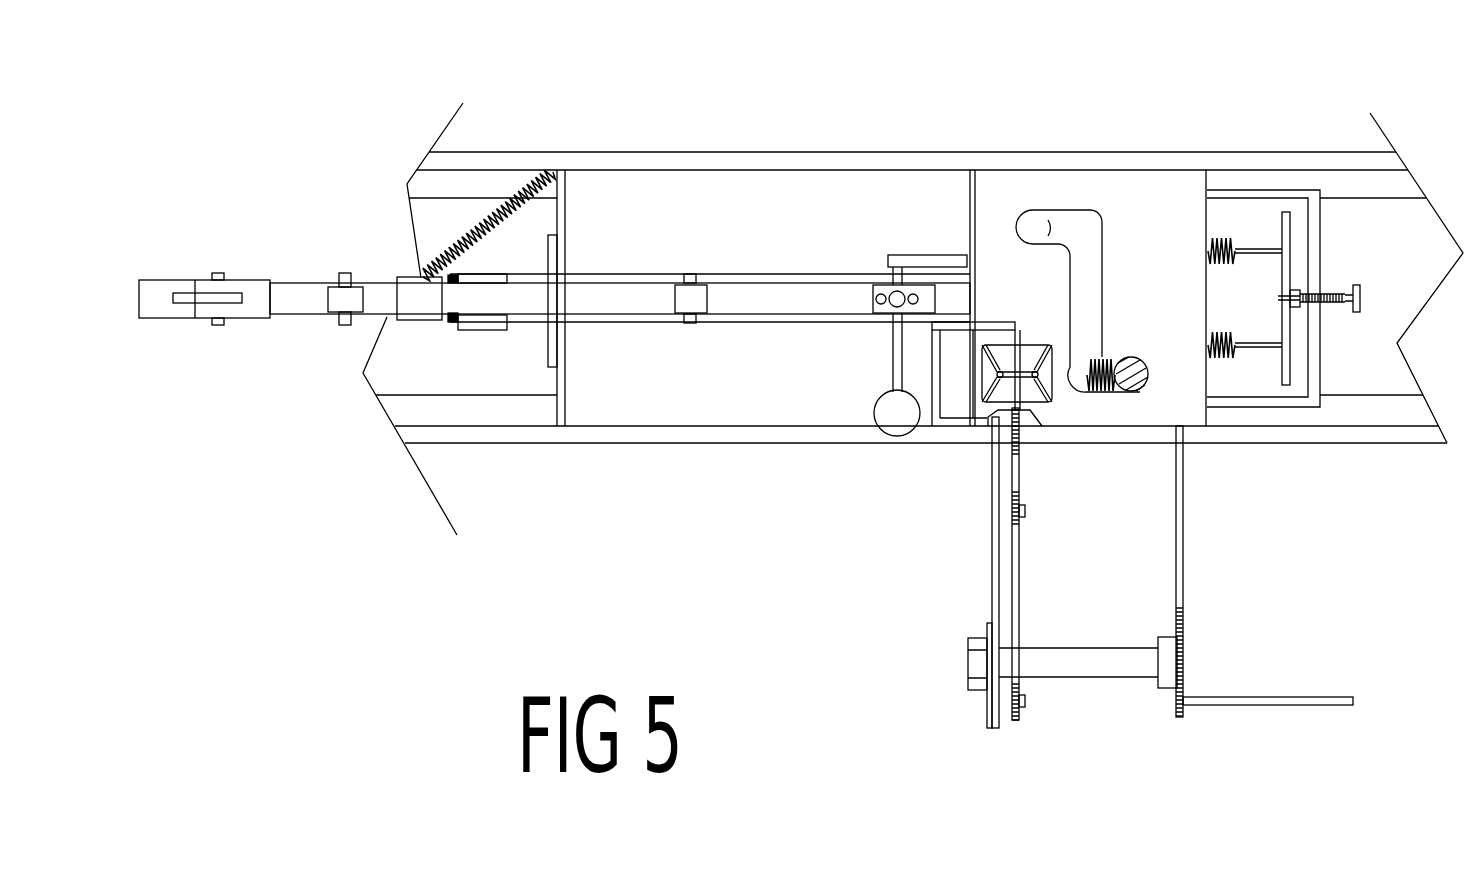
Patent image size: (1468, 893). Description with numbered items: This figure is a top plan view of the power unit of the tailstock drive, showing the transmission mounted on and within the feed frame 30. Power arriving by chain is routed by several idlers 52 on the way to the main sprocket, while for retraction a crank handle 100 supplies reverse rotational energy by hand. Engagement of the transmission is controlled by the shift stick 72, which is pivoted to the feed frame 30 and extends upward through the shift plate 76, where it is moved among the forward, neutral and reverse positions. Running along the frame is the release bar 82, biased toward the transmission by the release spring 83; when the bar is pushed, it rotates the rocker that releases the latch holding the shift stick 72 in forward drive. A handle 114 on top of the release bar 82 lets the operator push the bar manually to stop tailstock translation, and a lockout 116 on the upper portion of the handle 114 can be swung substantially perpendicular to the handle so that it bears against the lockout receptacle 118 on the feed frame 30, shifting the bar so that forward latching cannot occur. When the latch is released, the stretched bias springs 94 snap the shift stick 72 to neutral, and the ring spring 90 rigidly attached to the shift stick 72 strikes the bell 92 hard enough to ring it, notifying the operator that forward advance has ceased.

The feed frame 30 is at (560, 220).
The idlers 52 is at (1018, 710).
The shift stick 72 is at (1138, 357).
The shift plate 76 is at (1177, 202).
The release bar 82 is at (775, 292).
The release spring 83 is at (517, 190).
The ring spring 90 is at (1093, 360).
The bell 92 is at (1035, 357).
The bias springs 94 is at (1233, 260).
The crank handle 100 is at (1326, 698).
The handle 114 is at (902, 422).
The lockout 116 is at (927, 258).
The lockout receptacle 118 is at (418, 303).